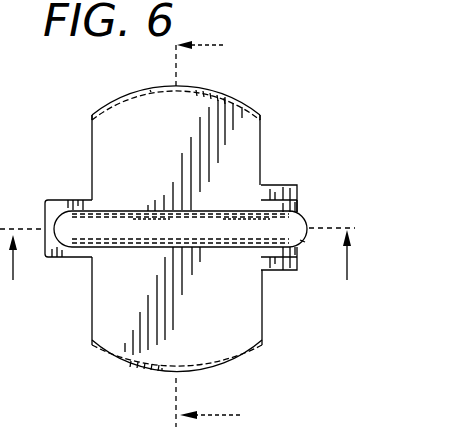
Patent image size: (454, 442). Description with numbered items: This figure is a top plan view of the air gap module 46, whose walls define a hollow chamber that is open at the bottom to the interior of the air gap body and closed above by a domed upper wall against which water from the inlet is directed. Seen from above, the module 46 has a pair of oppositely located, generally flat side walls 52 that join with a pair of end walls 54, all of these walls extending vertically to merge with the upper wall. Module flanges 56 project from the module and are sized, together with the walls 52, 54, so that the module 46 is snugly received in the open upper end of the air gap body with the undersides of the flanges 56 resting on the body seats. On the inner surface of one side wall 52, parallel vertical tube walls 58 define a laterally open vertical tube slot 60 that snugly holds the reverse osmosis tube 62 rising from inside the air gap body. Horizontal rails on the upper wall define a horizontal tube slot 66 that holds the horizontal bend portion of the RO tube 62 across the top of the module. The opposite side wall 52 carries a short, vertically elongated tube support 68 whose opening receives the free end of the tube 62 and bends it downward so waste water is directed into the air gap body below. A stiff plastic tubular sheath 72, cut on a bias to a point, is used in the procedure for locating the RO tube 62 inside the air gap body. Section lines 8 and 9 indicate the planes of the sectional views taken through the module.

The air gap module 46 is at (256, 99).
The side wall 52 is at (264, 143).
The end wall 54 is at (150, 90).
The module flange 56 is at (110, 102).
The tube wall 58 is at (277, 185).
The vertical tube slot 60 is at (299, 202).
The reverse osmosis tube 62 is at (72, 233).
The horizontal tube slot 66 is at (215, 237).
The tube support 68 is at (60, 200).
The tubular sheath 72 is at (303, 240).
The section line 8- 8 is at (178, 272).
The section line 9- 9 is at (224, 231).